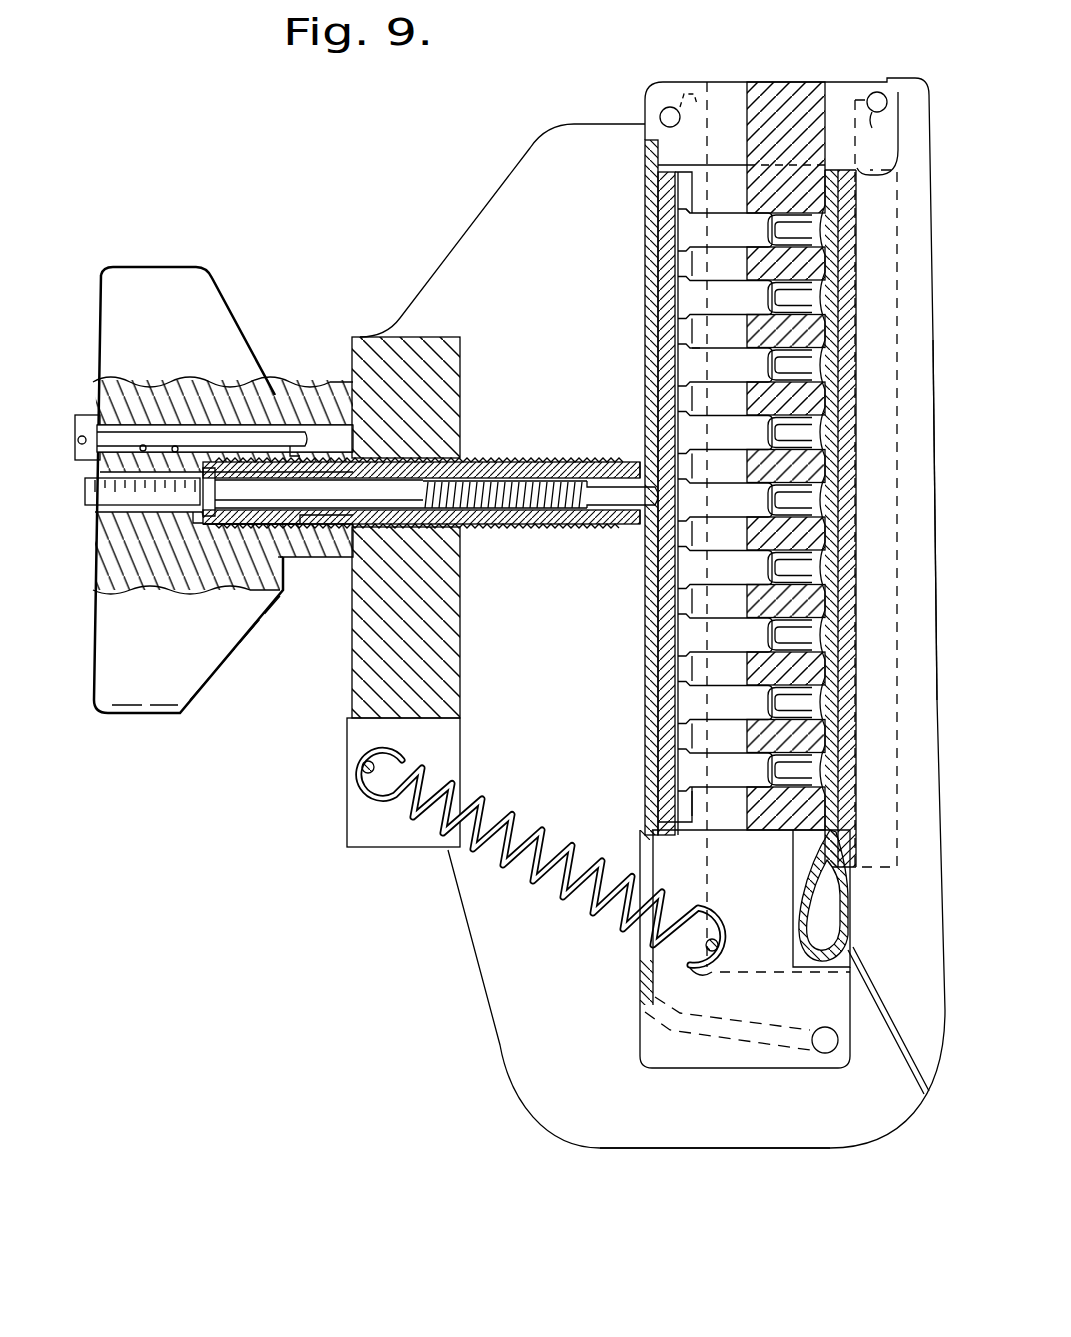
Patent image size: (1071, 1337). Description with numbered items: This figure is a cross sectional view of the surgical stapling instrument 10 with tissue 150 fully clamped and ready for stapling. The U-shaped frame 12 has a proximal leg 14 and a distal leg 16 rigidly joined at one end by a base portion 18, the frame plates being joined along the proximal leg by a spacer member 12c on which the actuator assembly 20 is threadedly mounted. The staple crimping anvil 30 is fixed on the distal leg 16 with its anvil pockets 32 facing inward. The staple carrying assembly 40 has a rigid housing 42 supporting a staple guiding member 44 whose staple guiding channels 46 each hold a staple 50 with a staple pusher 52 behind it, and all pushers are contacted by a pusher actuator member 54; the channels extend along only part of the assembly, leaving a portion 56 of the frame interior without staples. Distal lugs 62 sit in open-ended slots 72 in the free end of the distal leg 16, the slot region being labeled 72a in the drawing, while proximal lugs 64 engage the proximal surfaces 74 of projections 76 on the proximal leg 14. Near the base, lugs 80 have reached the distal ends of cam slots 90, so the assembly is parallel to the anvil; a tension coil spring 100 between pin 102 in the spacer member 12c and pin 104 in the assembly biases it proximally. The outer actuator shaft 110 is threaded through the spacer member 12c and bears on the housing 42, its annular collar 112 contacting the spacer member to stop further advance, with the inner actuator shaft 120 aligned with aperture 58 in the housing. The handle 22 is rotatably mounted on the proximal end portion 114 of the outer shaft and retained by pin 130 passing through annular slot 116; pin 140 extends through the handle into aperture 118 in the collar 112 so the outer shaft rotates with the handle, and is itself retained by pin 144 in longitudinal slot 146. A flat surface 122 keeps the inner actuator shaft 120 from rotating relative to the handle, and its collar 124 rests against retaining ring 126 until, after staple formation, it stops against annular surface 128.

The instrument 10 is at (236, 855).
The U-shaped frame 12 is at (482, 1012).
The spacer member 12c is at (353, 690).
The proximal leg 14 is at (503, 197).
The distal leg 16 is at (926, 370).
The base portion 18 is at (718, 1150).
The actuator assembly 20 is at (140, 735).
The handle 22 is at (180, 272).
The staple crimping anvil 30 is at (848, 468).
The anvil pockets 32 is at (850, 355).
The staple carrying assembly 40 is at (600, 302).
The housing 42 is at (648, 217).
The staple guiding member 44 is at (760, 265).
The staple guiding channels 46 is at (852, 240).
The staple 50 is at (770, 233).
The staple pusher 52 is at (686, 231).
The pusher actuator member 54 is at (680, 329).
The portion of the interior of the U-shaped frame 56 is at (786, 835).
The aperture 58 is at (630, 470).
The distal lugs 62 is at (877, 92).
The proximal lugs 64 is at (660, 113).
The open-ended slots 72 is at (872, 128).
The latch lip 72a is at (912, 78).
The proximal surfaces 74 is at (683, 90).
The projections 76 is at (706, 90).
The lugs 80 is at (840, 1046).
The cam slots 90 is at (718, 1052).
The tension coil spring 100 is at (560, 900).
The pin 102 is at (362, 768).
The pin 104 is at (716, 965).
The outer actuator shaft 110 is at (505, 530).
The annular collar 112 is at (308, 556).
The proximal end portion 114 is at (247, 530).
The annular slot 116 is at (283, 572).
The aperture 118 is at (333, 442).
The inner actuator shaft 120 is at (620, 512).
The flat surface 122 is at (83, 492).
The collar 124 is at (208, 528).
The retaining ring 126 is at (200, 514).
The annular surface 128 is at (255, 442).
The pin 130 is at (292, 455).
The pin 140 is at (98, 392).
The pin 144 is at (143, 446).
The longitudinal slot 146 is at (176, 447).
The tissue 150 is at (848, 885).